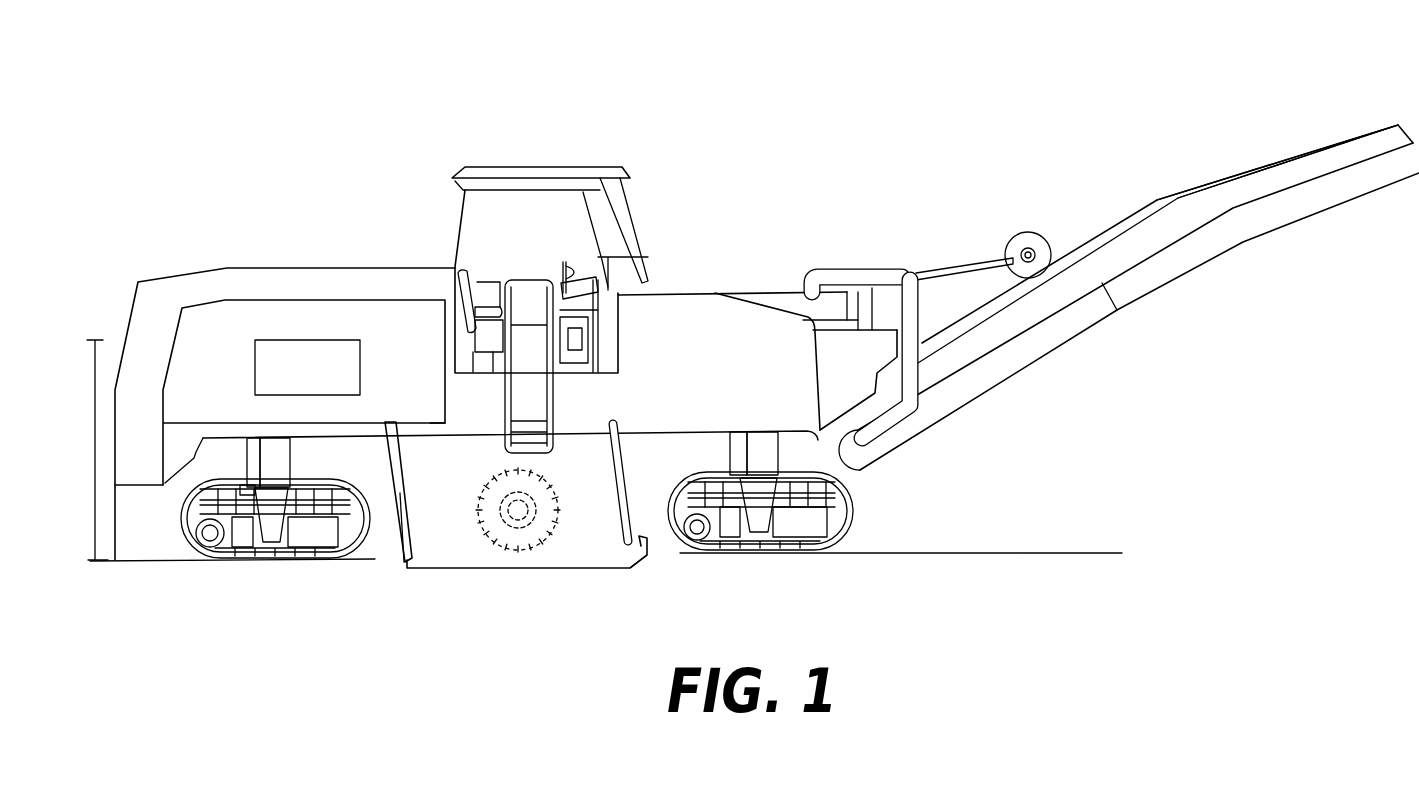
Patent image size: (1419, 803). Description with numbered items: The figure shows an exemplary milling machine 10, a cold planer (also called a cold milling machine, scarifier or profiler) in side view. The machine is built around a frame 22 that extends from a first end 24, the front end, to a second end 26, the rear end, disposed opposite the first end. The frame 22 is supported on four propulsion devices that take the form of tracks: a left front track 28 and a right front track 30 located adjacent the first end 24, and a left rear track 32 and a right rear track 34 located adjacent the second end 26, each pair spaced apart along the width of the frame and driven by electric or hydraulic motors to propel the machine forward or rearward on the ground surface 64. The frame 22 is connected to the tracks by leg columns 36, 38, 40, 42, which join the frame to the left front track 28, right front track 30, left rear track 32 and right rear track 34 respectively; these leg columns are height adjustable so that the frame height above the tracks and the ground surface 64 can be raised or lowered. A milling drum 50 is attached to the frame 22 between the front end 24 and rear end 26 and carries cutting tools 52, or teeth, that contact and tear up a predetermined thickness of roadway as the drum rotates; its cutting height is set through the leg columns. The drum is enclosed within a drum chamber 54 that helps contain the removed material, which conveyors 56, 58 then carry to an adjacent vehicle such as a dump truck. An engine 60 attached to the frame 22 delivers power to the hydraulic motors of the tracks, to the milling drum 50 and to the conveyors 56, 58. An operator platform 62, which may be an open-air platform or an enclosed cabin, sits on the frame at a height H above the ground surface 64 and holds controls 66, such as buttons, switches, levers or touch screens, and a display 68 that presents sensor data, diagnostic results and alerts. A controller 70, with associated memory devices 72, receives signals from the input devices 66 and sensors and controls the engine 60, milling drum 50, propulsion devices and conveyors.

The milling machine 10 is at (647, 85).
The frame 22 is at (210, 432).
The first end 24 is at (1129, 297).
The second end 26 is at (114, 326).
The left front track 28 is at (794, 511).
The right front track 30 is at (868, 535).
The left rear track 32 is at (248, 541).
The right rear track 34 is at (180, 543).
The leg column 36 is at (737, 448).
The leg column 38 is at (800, 530).
The leg column 40 is at (247, 463).
The leg column 42 is at (288, 478).
The milling drum 50 is at (517, 537).
The cutting tools 52 is at (533, 488).
The drum chamber 54 is at (430, 547).
The conveyor 56 is at (647, 428).
The conveyor 58 is at (1135, 290).
The engine 60 is at (299, 380).
The operator platform 62 is at (449, 232).
The ground surface 64 is at (108, 561).
The controls 66 is at (583, 278).
The display 68 is at (556, 280).
The controller 70 is at (592, 350).
The memory devices 72 is at (578, 332).